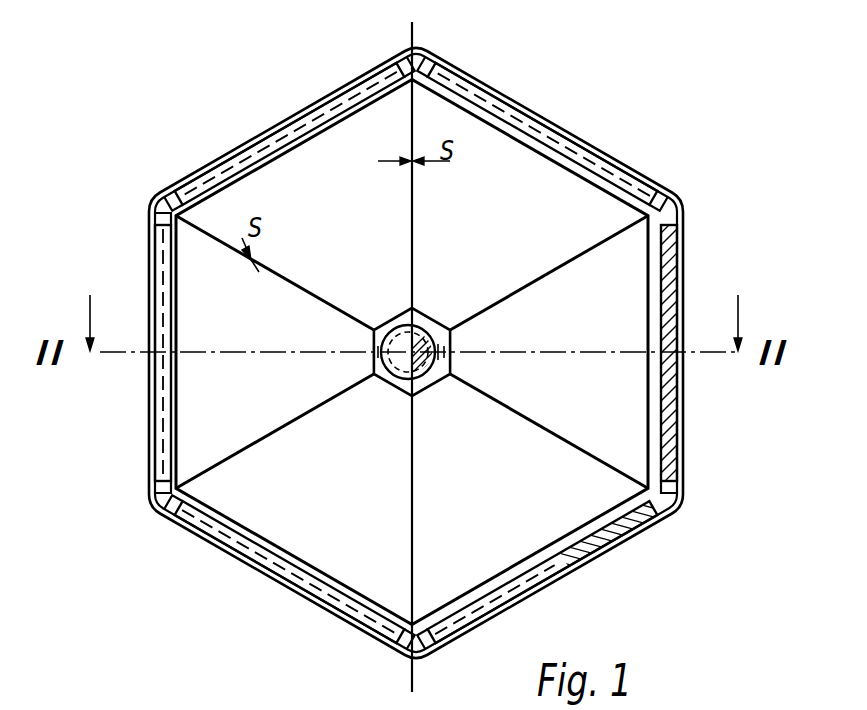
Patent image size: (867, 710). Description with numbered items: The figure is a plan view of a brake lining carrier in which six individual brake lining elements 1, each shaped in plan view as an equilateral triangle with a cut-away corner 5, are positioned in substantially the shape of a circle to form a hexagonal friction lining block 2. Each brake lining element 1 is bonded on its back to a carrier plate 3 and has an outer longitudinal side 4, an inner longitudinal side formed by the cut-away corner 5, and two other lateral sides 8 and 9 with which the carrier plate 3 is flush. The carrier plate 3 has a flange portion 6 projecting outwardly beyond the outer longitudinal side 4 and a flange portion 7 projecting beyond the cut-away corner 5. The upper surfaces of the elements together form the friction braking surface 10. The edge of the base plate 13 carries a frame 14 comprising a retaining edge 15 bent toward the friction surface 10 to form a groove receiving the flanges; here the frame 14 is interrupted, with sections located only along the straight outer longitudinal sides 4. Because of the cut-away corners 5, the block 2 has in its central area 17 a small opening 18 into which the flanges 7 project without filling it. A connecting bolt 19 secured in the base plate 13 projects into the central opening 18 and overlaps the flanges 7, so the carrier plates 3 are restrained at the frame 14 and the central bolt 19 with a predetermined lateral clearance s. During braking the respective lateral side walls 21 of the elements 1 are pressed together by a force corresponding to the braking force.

The brake lining element 1 is at (608, 265).
The friction lining block 2 is at (686, 250).
The carrier plate 3 is at (676, 222).
The outer longitudinal side 4 is at (650, 403).
The cut-away corner (inner longitudinal side) 5 is at (440, 324).
The flange portion 6 is at (652, 490).
The flange portion 7 is at (447, 358).
The lateral side 8 is at (558, 266).
The lateral side 9 is at (558, 452).
The friction braking surface 10 is at (290, 184).
The base plate 13 is at (678, 510).
The frame 14 is at (247, 565).
The retaining edge 15 is at (292, 590).
The central area 17 is at (374, 361).
The central opening 18 is at (394, 386).
The connecting bolt 19 is at (421, 373).
The lateral side wall 21 is at (410, 244).